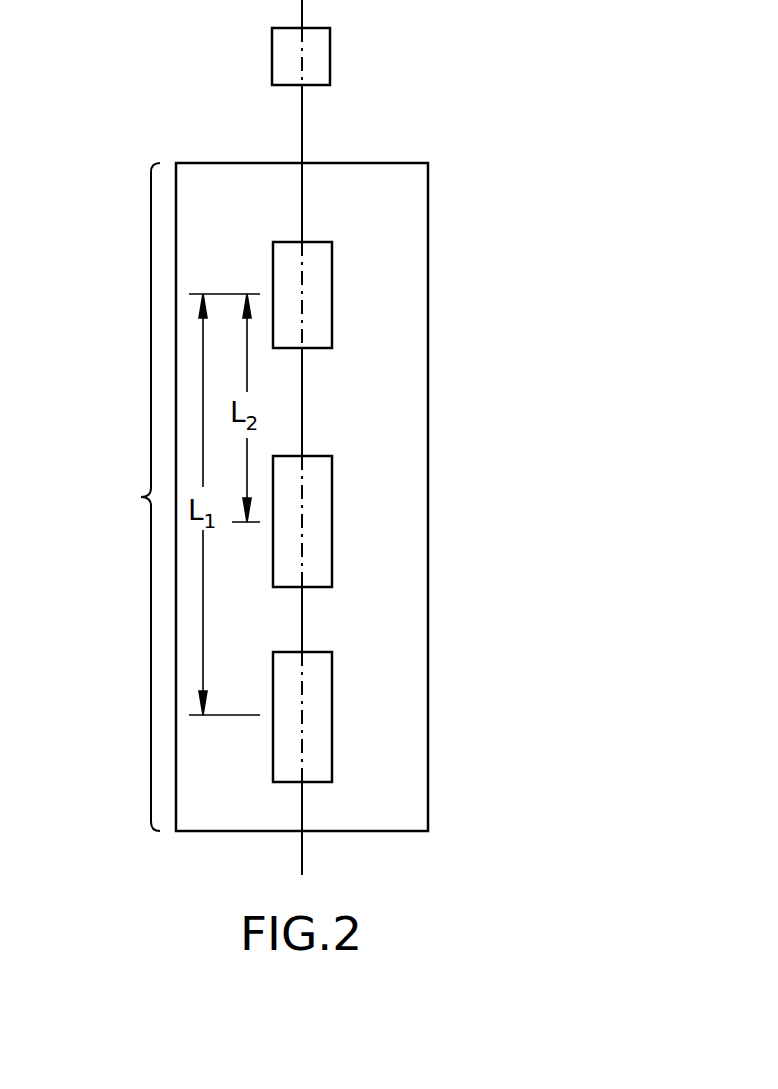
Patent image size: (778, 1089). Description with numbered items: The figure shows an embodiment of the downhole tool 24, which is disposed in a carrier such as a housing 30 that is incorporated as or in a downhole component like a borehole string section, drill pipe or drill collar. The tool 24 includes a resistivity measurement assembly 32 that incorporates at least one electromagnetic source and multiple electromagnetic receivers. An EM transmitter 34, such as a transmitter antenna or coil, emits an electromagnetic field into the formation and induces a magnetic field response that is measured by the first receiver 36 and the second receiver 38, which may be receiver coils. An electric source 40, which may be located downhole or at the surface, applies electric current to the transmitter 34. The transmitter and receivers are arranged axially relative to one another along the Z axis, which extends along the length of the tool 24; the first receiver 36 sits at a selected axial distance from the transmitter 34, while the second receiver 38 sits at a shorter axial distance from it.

The downhole tool 24 is at (132, 127).
The housing 30 is at (428, 214).
The resistivity measurement assembly 32 is at (132, 497).
The EM transmitter 34 is at (332, 294).
The first receiver 36 is at (332, 688).
The second receiver 38 is at (332, 520).
The electric source 40 is at (330, 55).
The Z axis Z is at (302, 716).